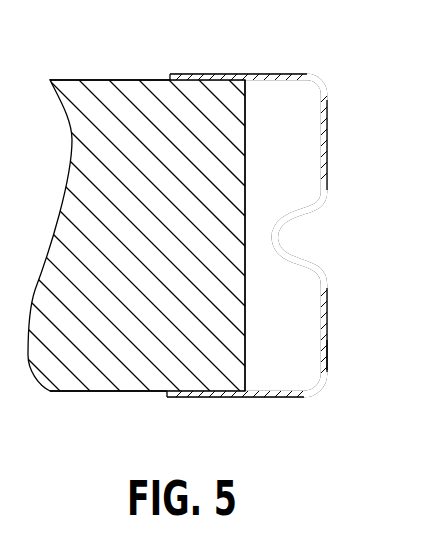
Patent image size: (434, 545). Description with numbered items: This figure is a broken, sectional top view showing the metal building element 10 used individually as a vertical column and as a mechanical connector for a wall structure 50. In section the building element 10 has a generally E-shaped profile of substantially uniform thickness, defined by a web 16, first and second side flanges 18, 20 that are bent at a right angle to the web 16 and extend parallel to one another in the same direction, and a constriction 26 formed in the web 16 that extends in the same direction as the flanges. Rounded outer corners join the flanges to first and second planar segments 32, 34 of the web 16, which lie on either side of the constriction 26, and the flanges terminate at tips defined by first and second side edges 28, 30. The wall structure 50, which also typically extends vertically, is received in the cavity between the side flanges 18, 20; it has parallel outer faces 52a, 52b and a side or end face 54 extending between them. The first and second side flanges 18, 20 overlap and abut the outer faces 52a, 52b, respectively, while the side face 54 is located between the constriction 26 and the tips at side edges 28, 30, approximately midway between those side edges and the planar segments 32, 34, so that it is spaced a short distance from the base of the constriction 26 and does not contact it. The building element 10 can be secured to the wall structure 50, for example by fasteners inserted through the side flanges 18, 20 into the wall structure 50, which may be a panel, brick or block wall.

The building element 10 is at (323, 74).
The web 16 is at (333, 355).
The first side flange 18 is at (210, 73).
The second side flange 20 is at (250, 402).
The constriction 26 is at (294, 240).
The first side edge 28 is at (170, 76).
The second side edge 30 is at (168, 396).
The first planar segment 32 is at (328, 160).
The second planar segment 34 is at (328, 312).
The wall structure 50 is at (65, 73).
The outer face 52a is at (97, 79).
The outer face 52b is at (75, 393).
The side face 54 is at (248, 147).